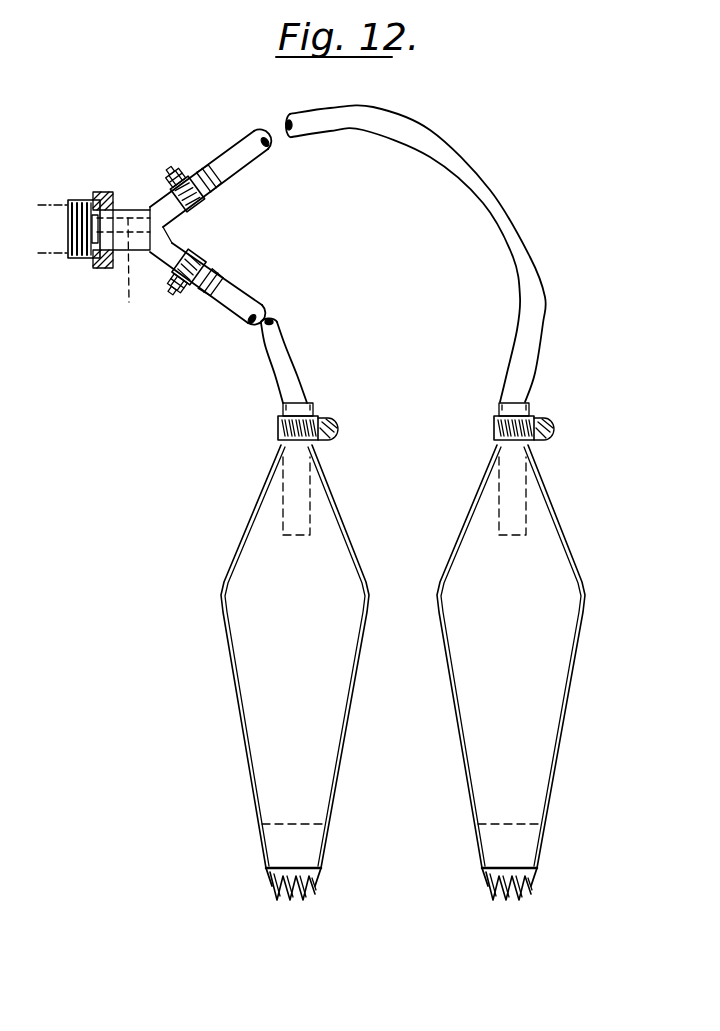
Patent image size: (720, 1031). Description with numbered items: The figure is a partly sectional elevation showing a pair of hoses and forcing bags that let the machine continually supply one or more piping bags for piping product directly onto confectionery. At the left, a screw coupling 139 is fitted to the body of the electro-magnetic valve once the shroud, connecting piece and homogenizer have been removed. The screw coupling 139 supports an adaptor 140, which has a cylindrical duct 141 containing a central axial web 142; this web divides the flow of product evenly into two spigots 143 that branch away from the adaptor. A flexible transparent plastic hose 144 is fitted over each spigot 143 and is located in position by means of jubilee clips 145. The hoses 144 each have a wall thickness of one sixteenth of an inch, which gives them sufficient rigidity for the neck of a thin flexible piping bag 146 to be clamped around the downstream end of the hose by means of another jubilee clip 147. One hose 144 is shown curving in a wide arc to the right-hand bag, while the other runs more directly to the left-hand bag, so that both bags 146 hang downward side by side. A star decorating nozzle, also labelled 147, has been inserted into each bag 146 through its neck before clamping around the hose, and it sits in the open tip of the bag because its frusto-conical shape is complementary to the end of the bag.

The screw coupling 139 is at (80, 200).
The adaptor 140 is at (127, 210).
The cylindrical duct 141 is at (105, 268).
The central axial web 142 is at (142, 272).
The spigot 143 is at (173, 205).
The flexible transparent plastic hose 144 is at (233, 150).
The jubilee clip 145 is at (193, 207).
The piping bag 146 is at (343, 528).
The jubilee clip 147 is at (320, 423).